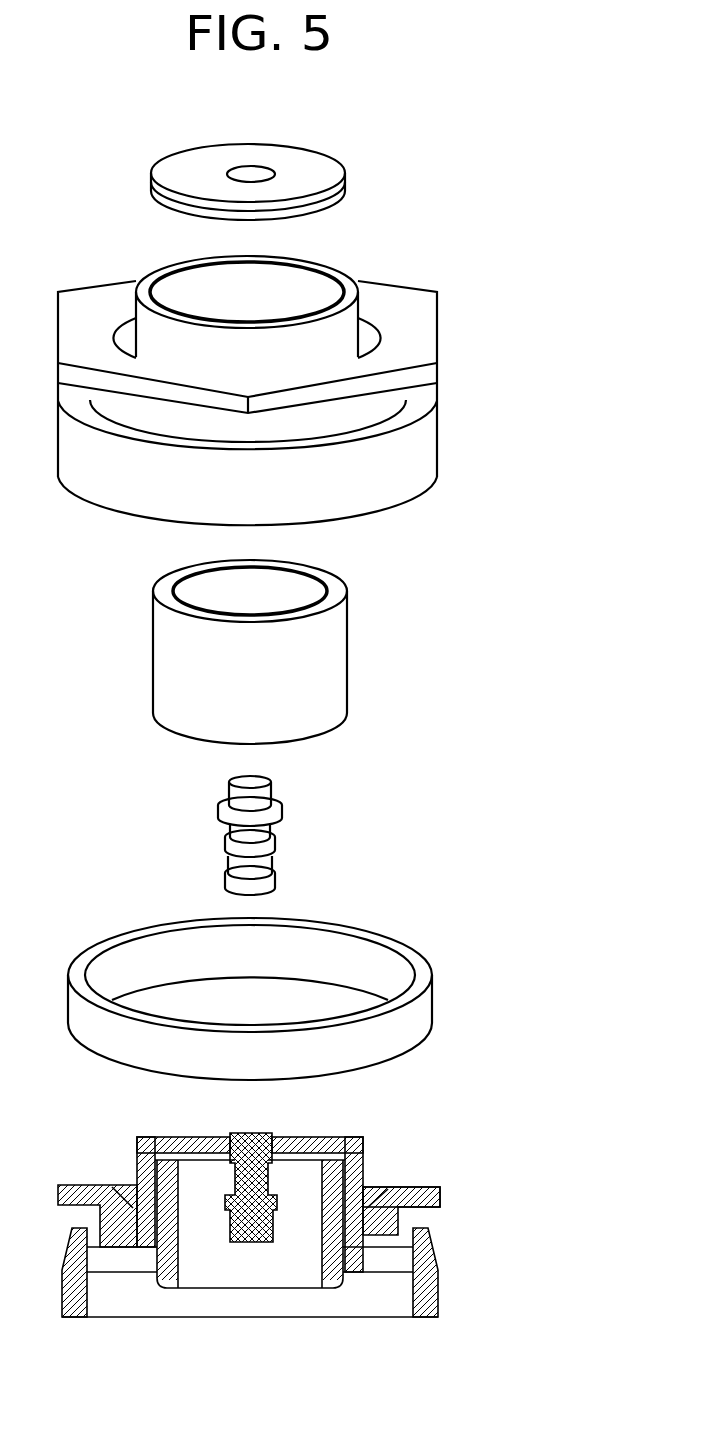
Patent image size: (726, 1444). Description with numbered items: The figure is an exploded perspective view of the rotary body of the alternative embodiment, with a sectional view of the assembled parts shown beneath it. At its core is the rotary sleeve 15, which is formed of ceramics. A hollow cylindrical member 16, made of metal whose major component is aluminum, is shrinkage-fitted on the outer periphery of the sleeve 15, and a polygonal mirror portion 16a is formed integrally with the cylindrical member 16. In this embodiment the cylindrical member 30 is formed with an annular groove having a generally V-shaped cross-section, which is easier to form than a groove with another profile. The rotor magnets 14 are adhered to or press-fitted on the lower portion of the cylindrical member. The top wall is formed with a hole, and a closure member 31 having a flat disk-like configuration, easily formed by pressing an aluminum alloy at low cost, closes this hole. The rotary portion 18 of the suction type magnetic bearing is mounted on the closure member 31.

The closure member 31 is at (376, 176).
The cylindrical member 30 is at (472, 372).
The rotary sleeve 15 is at (443, 655).
The rotary portion 18 is at (305, 835).
The rotor magnets 14 is at (445, 987).
The cylindrical member 16 is at (387, 1237).
The polygonal mirror portion 16a is at (437, 1193).